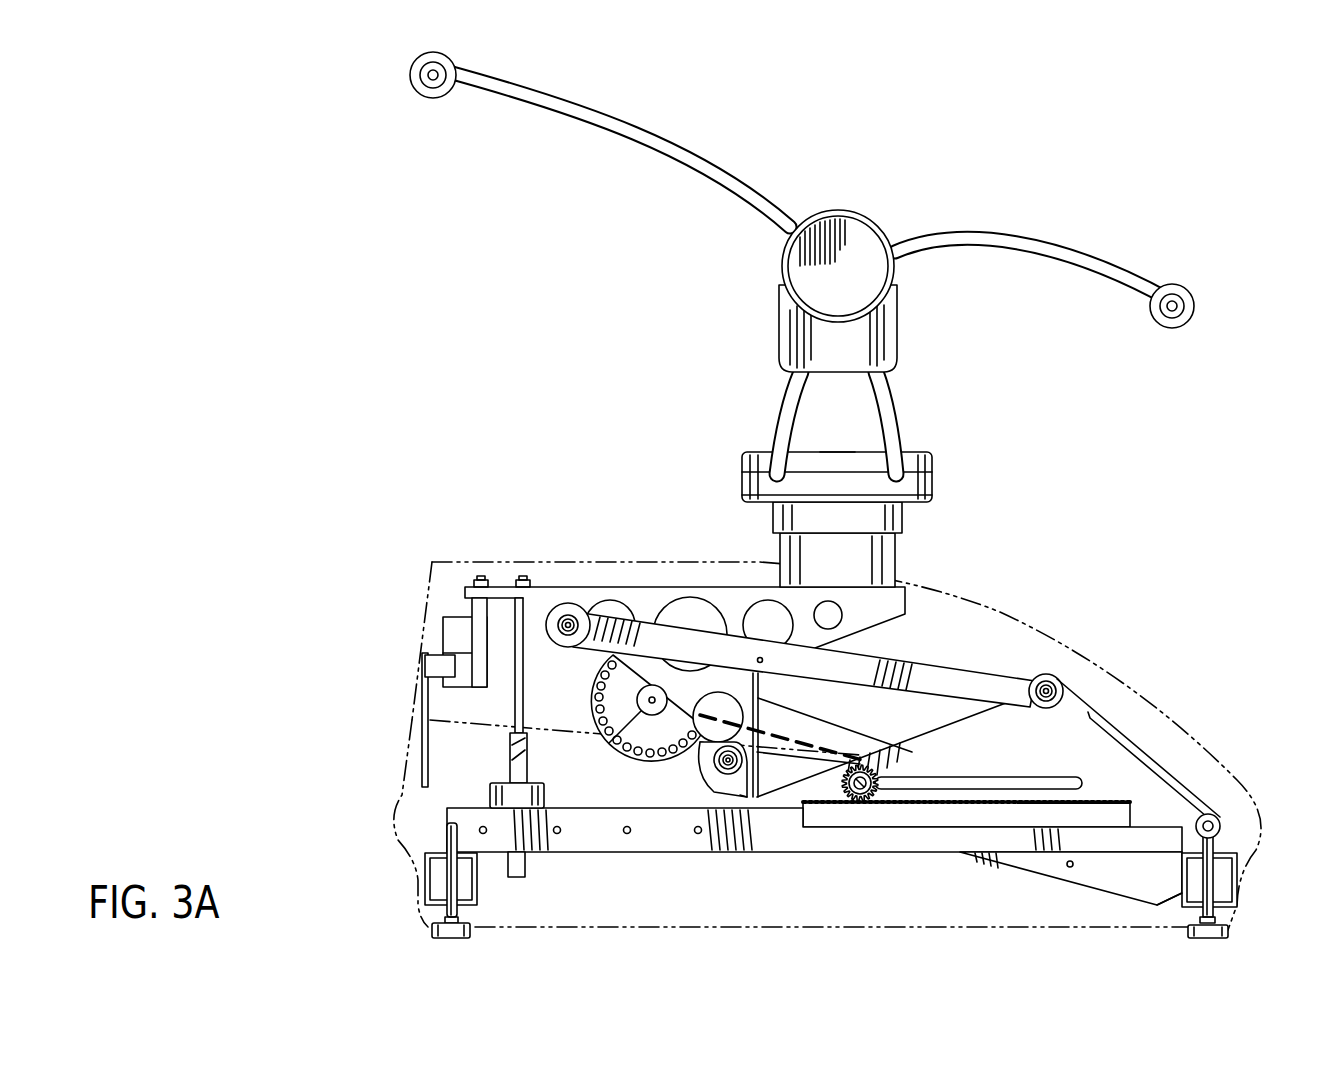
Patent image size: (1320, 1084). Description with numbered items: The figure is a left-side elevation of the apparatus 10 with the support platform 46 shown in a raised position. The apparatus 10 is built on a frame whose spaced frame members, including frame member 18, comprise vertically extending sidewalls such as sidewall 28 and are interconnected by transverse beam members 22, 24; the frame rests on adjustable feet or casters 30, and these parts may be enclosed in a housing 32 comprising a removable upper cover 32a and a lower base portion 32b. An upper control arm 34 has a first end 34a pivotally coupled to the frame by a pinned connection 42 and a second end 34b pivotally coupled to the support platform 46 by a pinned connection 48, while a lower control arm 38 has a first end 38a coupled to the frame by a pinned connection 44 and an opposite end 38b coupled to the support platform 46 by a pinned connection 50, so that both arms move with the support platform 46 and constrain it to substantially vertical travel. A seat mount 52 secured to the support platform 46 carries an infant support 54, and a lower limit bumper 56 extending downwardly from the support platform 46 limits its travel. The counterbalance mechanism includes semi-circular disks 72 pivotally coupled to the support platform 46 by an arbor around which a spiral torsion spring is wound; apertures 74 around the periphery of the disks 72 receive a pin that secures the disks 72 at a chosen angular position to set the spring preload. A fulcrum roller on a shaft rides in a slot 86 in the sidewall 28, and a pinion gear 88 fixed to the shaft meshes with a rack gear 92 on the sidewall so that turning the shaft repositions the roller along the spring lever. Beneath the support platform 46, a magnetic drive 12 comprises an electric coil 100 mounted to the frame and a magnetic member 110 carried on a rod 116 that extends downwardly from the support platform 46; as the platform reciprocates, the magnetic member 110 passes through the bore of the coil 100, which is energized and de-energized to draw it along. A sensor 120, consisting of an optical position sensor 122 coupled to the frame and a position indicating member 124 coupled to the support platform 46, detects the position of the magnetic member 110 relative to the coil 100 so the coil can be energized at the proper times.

The apparatus 10 is at (539, 428).
The magnetic drive 12 is at (505, 706).
The first frame member 18 is at (701, 858).
The transverse beam member 22 is at (478, 900).
The transverse beam member 24 is at (1238, 870).
The sidewall 28 is at (1093, 716).
The adjustable feet or casters 30 is at (432, 930).
The housing 32 is at (428, 558).
The removable upper cover 32a is at (420, 585).
The lower base portion 32b is at (420, 875).
The upper control arm 34 is at (925, 658).
The first end of upper control arm 34a is at (1013, 675).
The second end of upper control arm 34b is at (587, 604).
The lower control arm 38 is at (1006, 870).
The first end of lower control arm 38a is at (1173, 887).
The platform end of lower control arm 38b is at (703, 782).
The pinned connection 42 is at (1053, 678).
The pinned connection 44 is at (1210, 822).
The support platform 46 is at (690, 582).
The pinned connection 48 is at (566, 614).
The pinned connection 50 is at (740, 796).
The seat mount 52 is at (932, 481).
The infant support 54 is at (901, 378).
The lower limit bumper 56 is at (470, 636).
The semi-circular disk 72 is at (593, 700).
The apertures 74 is at (607, 748).
The slot 86 is at (1065, 788).
The pinion gear 88 is at (877, 773).
The rack gear 92 is at (1002, 800).
The electric coil 100 is at (490, 800).
The magnetic member 110 is at (510, 764).
The rod 116 is at (513, 626).
The sensor 120 is at (405, 702).
The optical position sensor 122 is at (430, 662).
The position indicating member 124 is at (443, 628).